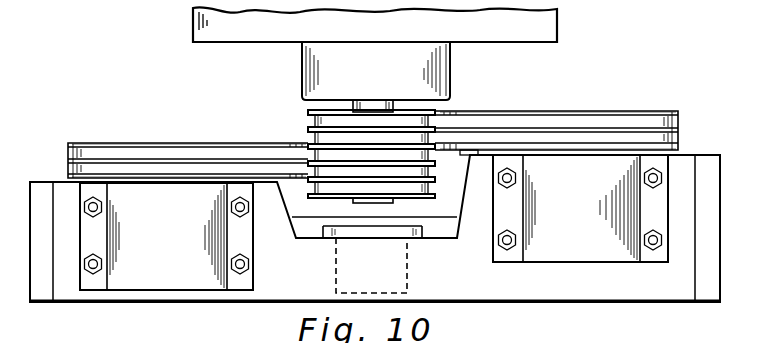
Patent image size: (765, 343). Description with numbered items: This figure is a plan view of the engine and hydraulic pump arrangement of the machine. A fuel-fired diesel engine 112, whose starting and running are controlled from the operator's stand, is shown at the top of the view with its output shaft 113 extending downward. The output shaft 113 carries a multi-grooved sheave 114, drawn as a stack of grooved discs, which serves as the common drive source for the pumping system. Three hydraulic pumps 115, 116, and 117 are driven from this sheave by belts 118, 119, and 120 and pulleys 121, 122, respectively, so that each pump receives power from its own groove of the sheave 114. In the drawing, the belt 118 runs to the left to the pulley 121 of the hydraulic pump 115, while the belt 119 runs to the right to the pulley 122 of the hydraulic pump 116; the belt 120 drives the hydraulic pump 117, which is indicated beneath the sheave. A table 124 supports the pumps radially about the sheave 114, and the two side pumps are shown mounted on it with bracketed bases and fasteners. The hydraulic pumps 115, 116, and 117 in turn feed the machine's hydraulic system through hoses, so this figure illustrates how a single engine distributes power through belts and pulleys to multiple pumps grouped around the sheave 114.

The diesel engine 112 is at (304, 58).
The output shaft 113 is at (351, 105).
The multi-grooved sheave 114 is at (433, 148).
The hydraulic pump 115 is at (227, 242).
The hydraulic pump 116 is at (600, 255).
The hydraulic pump 117 is at (408, 285).
The belt 118 is at (284, 174).
The belt 119 is at (455, 140).
The belt 120 is at (428, 191).
The pulley 121 is at (68, 145).
The pulley 122 is at (680, 113).
The table 124 is at (530, 293).